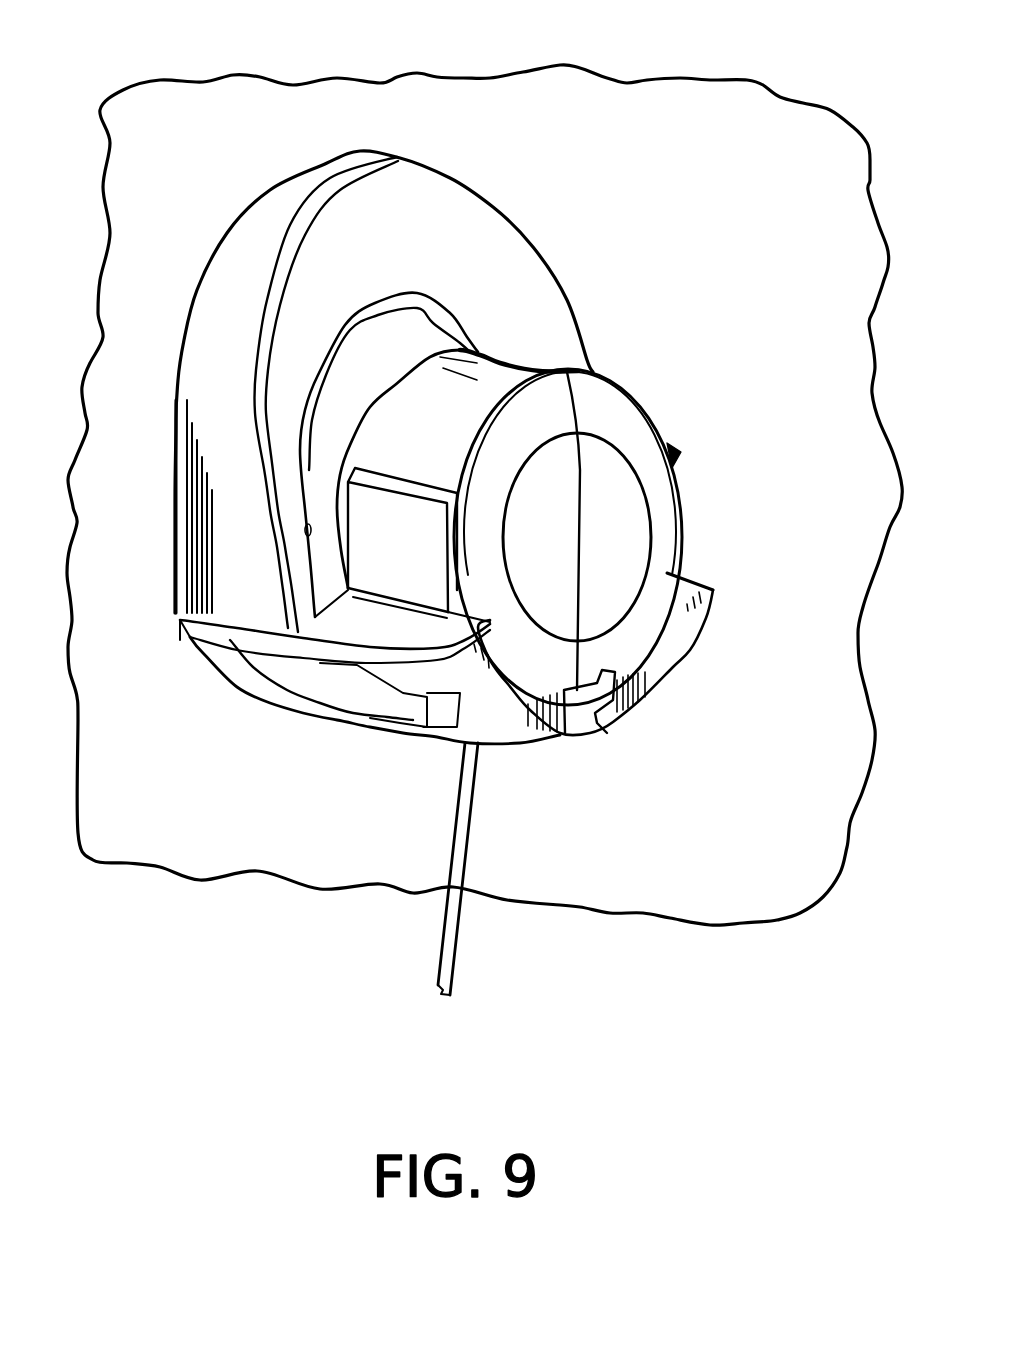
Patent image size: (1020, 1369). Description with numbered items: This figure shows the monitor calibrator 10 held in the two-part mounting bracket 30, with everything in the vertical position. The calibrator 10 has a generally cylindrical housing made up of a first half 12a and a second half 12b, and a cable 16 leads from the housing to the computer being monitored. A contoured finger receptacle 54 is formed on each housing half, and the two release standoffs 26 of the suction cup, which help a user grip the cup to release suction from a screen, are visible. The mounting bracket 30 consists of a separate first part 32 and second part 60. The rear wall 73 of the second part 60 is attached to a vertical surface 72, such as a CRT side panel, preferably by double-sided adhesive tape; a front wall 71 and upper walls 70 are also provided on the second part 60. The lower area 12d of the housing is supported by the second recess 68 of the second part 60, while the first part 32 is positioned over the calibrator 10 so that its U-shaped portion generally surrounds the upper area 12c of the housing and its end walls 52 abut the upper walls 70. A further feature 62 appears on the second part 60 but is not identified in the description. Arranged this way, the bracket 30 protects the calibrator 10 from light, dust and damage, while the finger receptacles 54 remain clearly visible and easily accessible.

The monitor calibrator 10 is at (660, 312).
The first half of the housing 12a is at (577, 537).
The second half of the housing 12b is at (665, 525).
The upper area of the housing 12c is at (490, 323).
The lower area of the housing 12d is at (583, 737).
The cable 16 is at (463, 910).
The release standoffs 26 is at (311, 524).
The mounting bracket 30 is at (176, 525).
The first part of the mounting bracket 32 is at (490, 210).
The end walls 52 is at (227, 620).
The contoured finger receptacle 54 is at (418, 546).
The second part of the mounting bracket 60 is at (308, 718).
The locking surface 62 is at (567, 737).
The second recess 68 is at (603, 730).
The upper walls 70 is at (382, 644).
The front wall 71 is at (668, 652).
The vertical surface 72 is at (230, 100).
The rear wall 73 is at (202, 667).